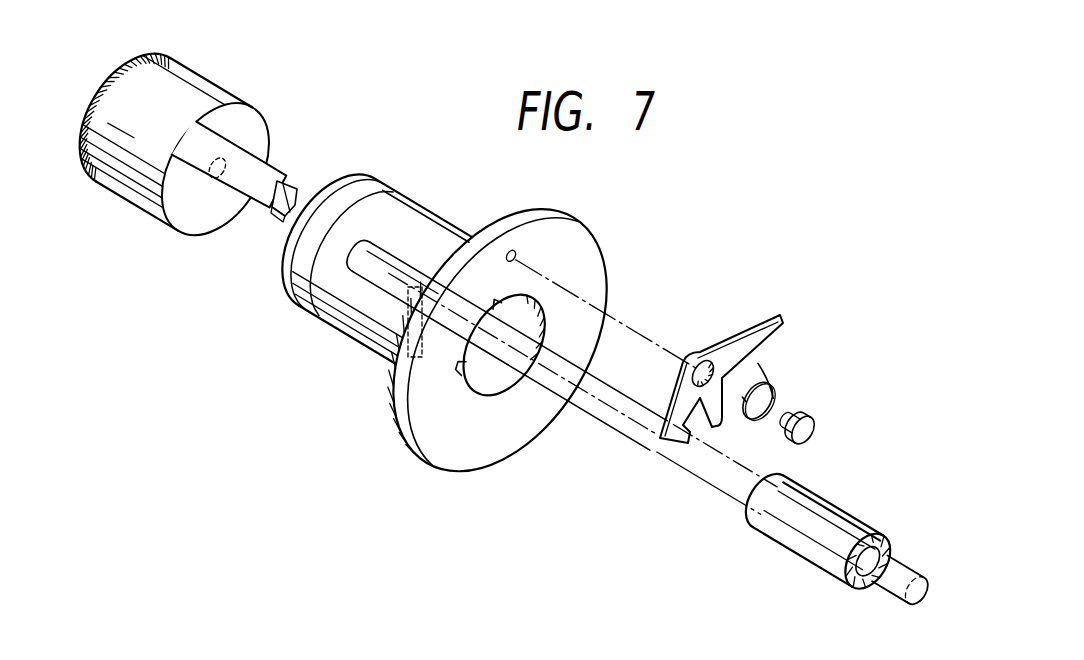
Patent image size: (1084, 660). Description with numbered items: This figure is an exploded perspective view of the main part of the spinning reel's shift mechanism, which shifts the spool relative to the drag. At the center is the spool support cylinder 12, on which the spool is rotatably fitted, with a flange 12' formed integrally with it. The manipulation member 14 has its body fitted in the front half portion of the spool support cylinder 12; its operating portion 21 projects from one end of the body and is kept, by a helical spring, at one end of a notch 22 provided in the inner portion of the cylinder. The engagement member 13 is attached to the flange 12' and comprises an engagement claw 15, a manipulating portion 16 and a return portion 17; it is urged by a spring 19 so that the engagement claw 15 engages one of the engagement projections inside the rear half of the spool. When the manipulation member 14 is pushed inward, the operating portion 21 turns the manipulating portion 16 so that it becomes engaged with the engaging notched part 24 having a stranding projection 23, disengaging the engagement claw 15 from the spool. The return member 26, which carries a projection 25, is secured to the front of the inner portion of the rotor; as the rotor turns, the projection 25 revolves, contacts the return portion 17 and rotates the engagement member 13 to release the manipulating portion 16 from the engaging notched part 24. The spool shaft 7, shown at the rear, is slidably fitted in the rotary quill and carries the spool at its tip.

The manipulation member 14 is at (217, 84).
The operating portion 21 is at (263, 170).
The stranding projection 23 is at (290, 175).
The engaging notched part 24 is at (270, 208).
The spool support cylinder 12 is at (478, 327).
The flange 12' is at (535, 361).
The notch 22 is at (457, 357).
The engagement member 13 is at (694, 350).
The engagement claw 15 is at (780, 327).
The manipulating portion 16 is at (673, 441).
The return portion 17 is at (717, 423).
The spring 19 is at (772, 392).
The projection 25 is at (840, 507).
The return member 26 is at (784, 547).
The spool shaft 7 is at (877, 597).